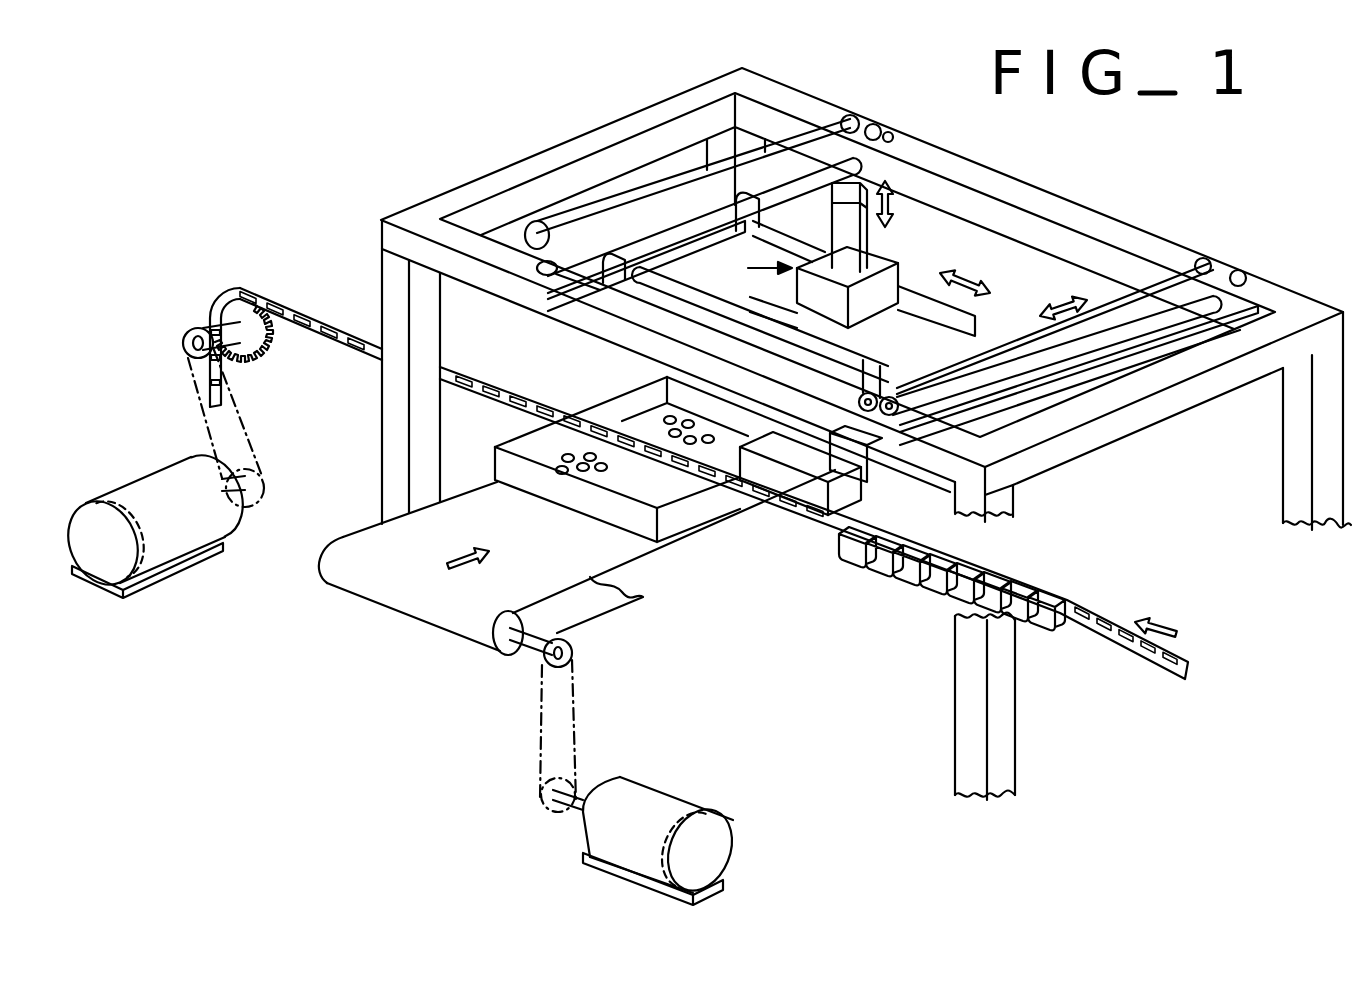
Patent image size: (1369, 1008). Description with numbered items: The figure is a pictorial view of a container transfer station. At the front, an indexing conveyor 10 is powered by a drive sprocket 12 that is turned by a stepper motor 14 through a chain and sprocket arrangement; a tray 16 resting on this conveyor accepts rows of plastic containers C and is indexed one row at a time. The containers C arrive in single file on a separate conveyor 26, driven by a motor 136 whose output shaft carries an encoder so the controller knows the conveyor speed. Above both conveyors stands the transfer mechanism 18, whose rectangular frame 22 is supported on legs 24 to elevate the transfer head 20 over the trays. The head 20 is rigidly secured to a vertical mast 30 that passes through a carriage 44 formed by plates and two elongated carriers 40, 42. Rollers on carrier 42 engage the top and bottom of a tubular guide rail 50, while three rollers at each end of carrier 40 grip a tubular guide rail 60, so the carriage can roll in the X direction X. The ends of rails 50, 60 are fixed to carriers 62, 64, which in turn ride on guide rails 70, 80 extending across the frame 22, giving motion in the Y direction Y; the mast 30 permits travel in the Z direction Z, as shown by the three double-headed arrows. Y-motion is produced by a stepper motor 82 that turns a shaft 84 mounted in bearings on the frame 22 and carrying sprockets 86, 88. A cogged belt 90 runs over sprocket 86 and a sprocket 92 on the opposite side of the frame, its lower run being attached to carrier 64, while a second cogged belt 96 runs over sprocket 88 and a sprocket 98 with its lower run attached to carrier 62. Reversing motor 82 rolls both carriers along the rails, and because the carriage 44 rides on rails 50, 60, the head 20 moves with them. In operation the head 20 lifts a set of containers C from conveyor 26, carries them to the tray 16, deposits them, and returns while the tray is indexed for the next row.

The indexing conveyor 10 is at (338, 542).
The drive sprocket 12 is at (573, 651).
The stepper motor 14 is at (660, 797).
The tray 16 is at (683, 527).
The transfer mechanism 18 is at (828, 434).
The transfer head 20 is at (775, 487).
The rectangular frame 22 is at (1112, 220).
The legs 24 is at (382, 415).
The conveyor 26 is at (267, 297).
The mast 30 is at (842, 475).
The carrier 40 is at (883, 347).
The carrier 42 is at (912, 296).
The carriage 44 is at (748, 268).
The tubular guide rail 50 is at (800, 243).
The tubular guide rail 60 is at (632, 352).
The carrier 62 is at (997, 378).
The carrier 64 is at (567, 280).
The guide rail 70 is at (1218, 304).
The guide rail 80 is at (653, 237).
The stepper motor 82 is at (533, 223).
The shaft 84 is at (612, 298).
The sprocket 86 is at (528, 287).
The sprocket 88 is at (890, 410).
The cogged belt 90 is at (698, 188).
The sprocket 92 is at (893, 128).
The cogged belt 96 is at (1178, 262).
The sprocket 98 is at (1240, 270).
The motor 136 is at (147, 567).
The containers C is at (845, 540).
The X direction X is at (983, 270).
The Y direction Y is at (1050, 312).
The Z direction Z is at (893, 205).